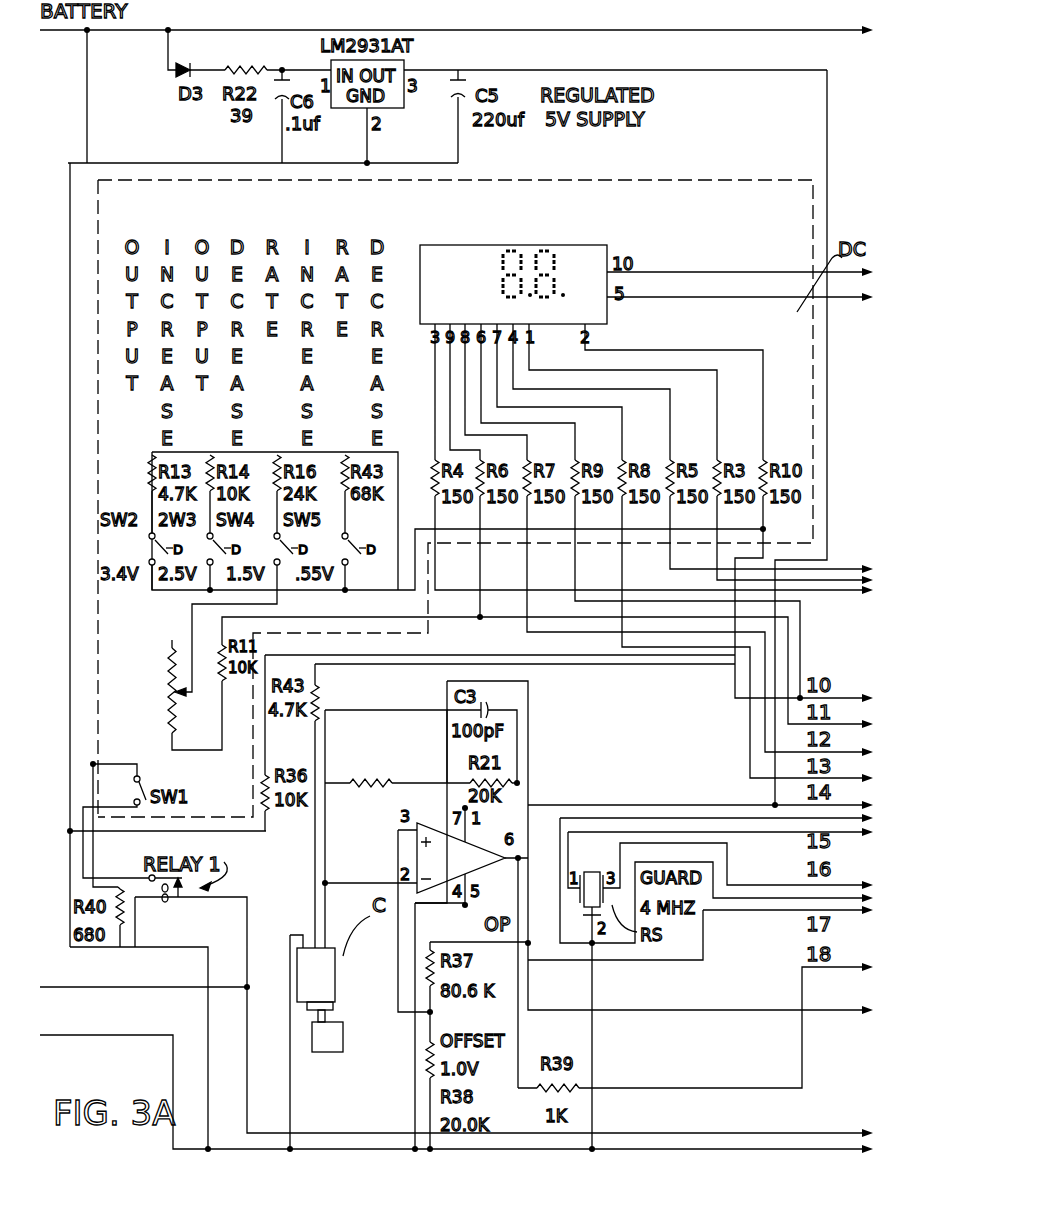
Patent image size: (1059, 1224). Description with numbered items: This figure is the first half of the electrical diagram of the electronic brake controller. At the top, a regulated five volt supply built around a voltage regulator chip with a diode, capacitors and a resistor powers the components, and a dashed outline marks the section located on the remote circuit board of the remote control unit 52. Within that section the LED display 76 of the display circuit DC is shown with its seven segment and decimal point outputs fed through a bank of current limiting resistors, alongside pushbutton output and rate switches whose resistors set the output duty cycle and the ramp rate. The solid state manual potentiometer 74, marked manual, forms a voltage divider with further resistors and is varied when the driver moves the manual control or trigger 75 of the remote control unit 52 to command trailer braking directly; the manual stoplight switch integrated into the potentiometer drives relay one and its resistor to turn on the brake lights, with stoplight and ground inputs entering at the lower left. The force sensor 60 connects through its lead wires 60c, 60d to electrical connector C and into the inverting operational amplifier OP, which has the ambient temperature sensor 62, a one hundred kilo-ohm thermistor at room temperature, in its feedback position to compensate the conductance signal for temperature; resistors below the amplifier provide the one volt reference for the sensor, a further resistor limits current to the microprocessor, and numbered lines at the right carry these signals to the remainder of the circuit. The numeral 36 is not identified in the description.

The remote control unit 52 is at (797, 188).
The LED display 76 is at (508, 258).
The solid state manual potentiometer 74 is at (180, 636).
The manual control or trigger 75 is at (138, 662).
The ambient temperature sensor 62 is at (356, 738).
The force sensor 60 is at (340, 1037).
The lead wire 60c is at (335, 1002).
The lead wire 60d is at (316, 1056).
The stoplights / ground input lines 36 is at (176, 989).